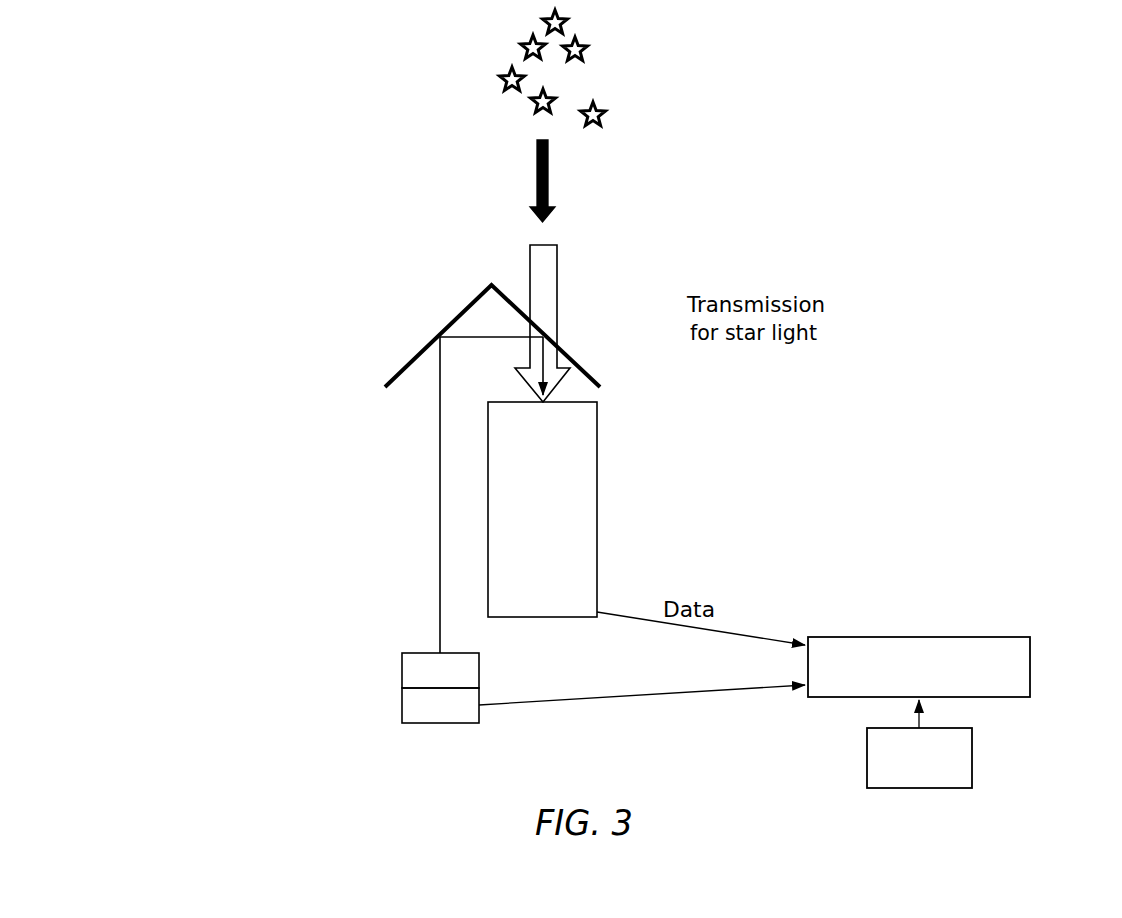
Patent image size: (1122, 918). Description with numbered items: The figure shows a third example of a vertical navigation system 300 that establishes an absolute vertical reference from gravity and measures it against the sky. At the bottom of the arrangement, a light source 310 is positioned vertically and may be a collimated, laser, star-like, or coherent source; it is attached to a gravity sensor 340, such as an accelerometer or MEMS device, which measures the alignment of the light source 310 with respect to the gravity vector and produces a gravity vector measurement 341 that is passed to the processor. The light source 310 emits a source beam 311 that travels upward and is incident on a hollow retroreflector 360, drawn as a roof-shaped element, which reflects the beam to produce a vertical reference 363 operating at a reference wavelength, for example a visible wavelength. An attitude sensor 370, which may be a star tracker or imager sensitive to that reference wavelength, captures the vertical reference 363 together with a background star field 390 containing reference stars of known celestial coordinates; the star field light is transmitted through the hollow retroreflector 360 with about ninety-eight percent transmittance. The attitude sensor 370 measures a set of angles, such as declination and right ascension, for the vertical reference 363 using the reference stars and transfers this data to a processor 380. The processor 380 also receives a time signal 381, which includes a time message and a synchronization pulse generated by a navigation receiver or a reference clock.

The vertical navigation system 300 is at (267, 135).
The light source 310 is at (402, 663).
The source beam 311 is at (448, 623).
The gravity sensor 340 is at (402, 707).
The gravity vector measurement 341 is at (623, 703).
The hollow retroreflector 360 is at (418, 343).
The vertical reference 363 is at (537, 367).
The attitude sensor 370 is at (563, 552).
The processor 380 is at (999, 678).
The time signal 381 is at (940, 771).
The background star field 390 is at (763, 150).